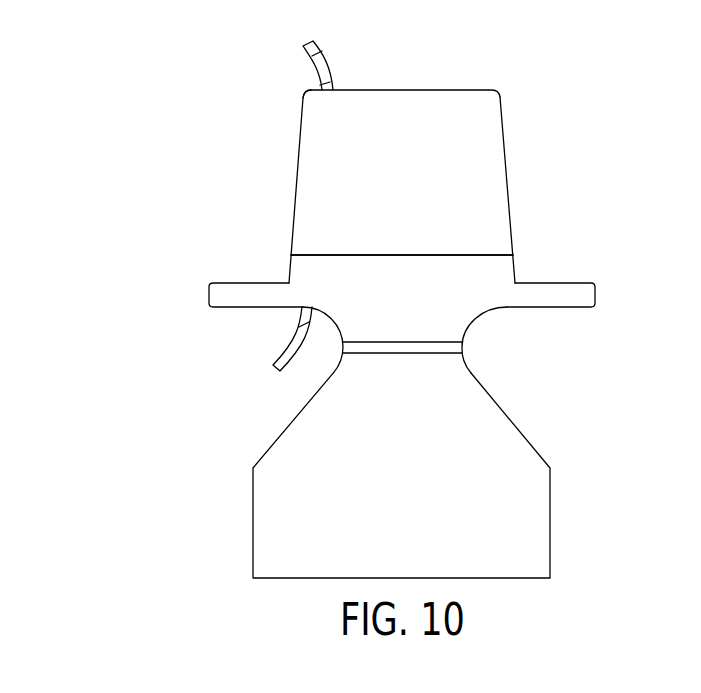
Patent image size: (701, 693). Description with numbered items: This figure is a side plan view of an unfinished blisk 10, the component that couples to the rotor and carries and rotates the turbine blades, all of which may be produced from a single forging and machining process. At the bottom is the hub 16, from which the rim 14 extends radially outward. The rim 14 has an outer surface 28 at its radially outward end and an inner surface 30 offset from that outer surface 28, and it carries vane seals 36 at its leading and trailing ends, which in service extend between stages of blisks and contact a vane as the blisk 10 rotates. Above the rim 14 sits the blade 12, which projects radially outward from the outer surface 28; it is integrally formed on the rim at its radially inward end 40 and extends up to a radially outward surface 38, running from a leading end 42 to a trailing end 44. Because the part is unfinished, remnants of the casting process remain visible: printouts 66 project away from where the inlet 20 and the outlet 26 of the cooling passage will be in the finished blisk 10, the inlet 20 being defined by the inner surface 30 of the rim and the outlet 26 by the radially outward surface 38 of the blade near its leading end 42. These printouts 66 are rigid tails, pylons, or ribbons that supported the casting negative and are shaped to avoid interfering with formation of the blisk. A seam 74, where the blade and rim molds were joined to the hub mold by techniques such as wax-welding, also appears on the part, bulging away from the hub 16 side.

The blisk 10 is at (320, 299).
The blade 12 is at (385, 196).
The rim 14 is at (352, 295).
The hub 16 is at (371, 460).
The inlet 20 is at (323, 292).
The outlet 26 is at (327, 133).
The outer surface 28 is at (402, 220).
The inner surface 30 is at (488, 342).
The vane seals 36 is at (396, 260).
The radially outward surface 38 is at (405, 59).
The radially inward end 40 is at (402, 289).
The leading end 42 is at (272, 186).
The trailing end 44 is at (535, 190).
The printouts 66 is at (311, 202).
The seam 74 is at (402, 377).